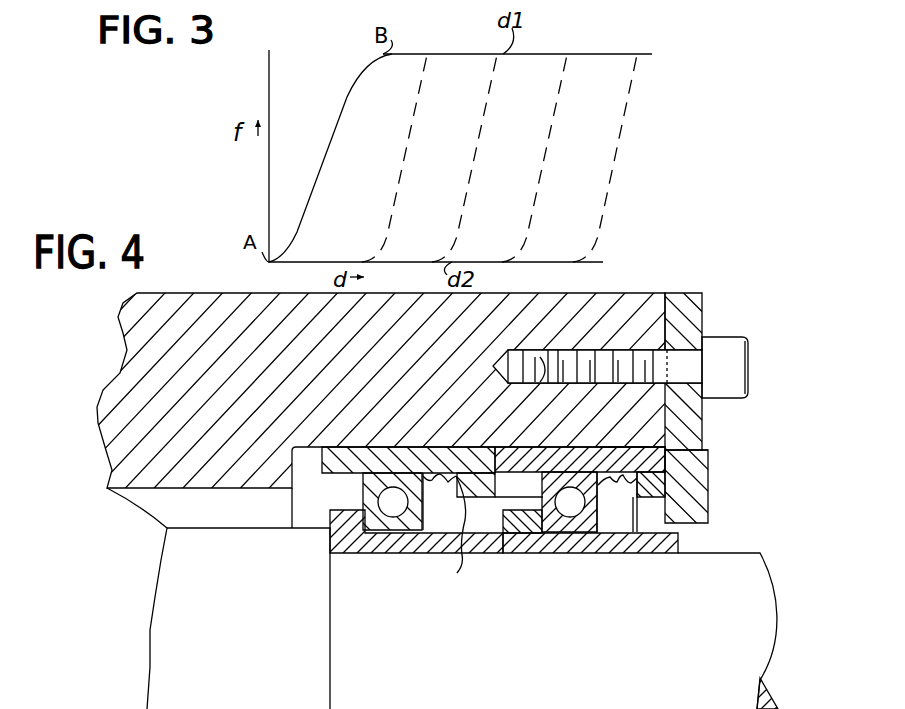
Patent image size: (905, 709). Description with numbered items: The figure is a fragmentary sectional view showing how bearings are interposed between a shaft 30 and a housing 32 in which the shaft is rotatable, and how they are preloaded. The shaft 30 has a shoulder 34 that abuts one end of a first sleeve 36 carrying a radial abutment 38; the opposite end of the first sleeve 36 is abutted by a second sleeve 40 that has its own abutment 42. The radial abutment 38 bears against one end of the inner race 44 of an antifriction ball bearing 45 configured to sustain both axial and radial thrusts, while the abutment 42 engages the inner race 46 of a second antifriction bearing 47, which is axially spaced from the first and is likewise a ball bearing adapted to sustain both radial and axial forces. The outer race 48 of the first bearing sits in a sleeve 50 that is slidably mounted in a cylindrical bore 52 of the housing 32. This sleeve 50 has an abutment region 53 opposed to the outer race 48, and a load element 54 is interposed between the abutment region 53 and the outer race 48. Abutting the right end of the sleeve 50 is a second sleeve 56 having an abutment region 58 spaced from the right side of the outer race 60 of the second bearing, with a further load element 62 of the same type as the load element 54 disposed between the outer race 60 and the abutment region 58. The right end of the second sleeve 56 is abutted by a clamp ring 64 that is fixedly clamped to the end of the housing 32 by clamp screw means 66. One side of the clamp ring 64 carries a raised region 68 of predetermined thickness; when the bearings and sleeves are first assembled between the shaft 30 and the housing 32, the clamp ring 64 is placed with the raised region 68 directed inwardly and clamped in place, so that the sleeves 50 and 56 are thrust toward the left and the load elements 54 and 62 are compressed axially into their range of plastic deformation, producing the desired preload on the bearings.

The shaft 30 is at (762, 556).
The housing 32 is at (655, 305).
The shoulder 34 is at (330, 598).
The first sleeve 36 is at (395, 547).
The radial abutment 38 is at (350, 510).
The second sleeve 40 is at (560, 547).
The abutment 42 is at (528, 507).
The inner race 44 is at (412, 522).
The antifriction ball bearing 45 is at (377, 528).
The inner race 46 is at (600, 525).
The second antifriction bearing 47 is at (578, 533).
The outer race 48 is at (414, 500).
The sleeve 50 is at (322, 463).
The cylindrical bore 52 is at (648, 437).
The abutment region 53 is at (473, 494).
The load element 54 is at (446, 537).
The second sleeve 56 is at (637, 463).
The abutment region 58 is at (652, 487).
The outer race 60 is at (626, 488).
The load element 62 is at (633, 493).
The clamp ring 64 is at (707, 507).
The clamp screw means 66 is at (735, 342).
The raised region 68 is at (710, 452).